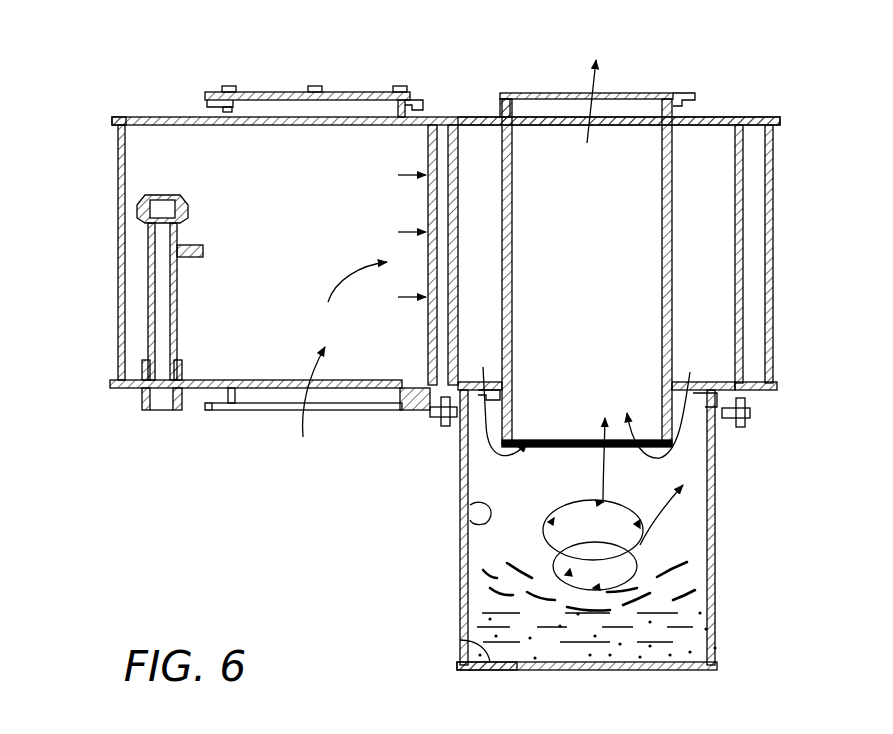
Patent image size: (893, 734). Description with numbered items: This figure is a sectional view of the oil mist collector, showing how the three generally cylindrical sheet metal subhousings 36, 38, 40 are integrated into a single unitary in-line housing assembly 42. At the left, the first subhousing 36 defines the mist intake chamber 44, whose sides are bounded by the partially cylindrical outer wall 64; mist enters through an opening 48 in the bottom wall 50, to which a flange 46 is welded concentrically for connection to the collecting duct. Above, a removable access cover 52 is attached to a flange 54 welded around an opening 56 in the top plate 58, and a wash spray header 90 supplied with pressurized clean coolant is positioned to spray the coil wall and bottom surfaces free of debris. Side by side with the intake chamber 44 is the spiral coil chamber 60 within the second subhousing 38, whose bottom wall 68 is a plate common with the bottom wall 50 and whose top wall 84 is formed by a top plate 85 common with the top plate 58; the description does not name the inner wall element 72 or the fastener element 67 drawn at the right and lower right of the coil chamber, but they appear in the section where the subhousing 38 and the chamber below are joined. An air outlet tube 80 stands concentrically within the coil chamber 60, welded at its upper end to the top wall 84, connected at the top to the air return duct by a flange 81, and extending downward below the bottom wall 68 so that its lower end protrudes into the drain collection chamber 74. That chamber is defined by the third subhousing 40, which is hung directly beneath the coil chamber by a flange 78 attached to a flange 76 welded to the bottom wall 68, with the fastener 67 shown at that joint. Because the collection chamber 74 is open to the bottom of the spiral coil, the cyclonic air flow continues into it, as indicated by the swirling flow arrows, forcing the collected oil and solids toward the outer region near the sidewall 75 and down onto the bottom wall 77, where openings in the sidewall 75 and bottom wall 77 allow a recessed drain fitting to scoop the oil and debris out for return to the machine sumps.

The first subhousing 36 is at (117, 323).
The second subhousing 38 is at (773, 211).
The third subhousing 40 is at (715, 582).
The housing assembly 42 is at (532, 92).
The mist intake chamber 44 is at (262, 228).
The flange 46 is at (227, 412).
The opening 48 is at (248, 380).
The bottom wall 50 is at (200, 388).
The removable access cover 52 is at (257, 92).
The flange 54 is at (424, 104).
The opening 56 is at (370, 122).
The top plate 58 is at (166, 117).
The spiral coil chamber 60 is at (690, 150).
The outer wall 64 is at (470, 380).
The clamp bolt 67 is at (779, 391).
The bottom wall 68 is at (752, 377).
The inner wall 72 is at (753, 280).
The drain collection chamber 74 is at (510, 495).
The sidewall 75 is at (470, 520).
The flange 76 is at (728, 382).
The bottom wall 77 is at (460, 642).
The flange 78 is at (449, 430).
The air outlet tube 80 is at (609, 253).
The flange 81 is at (676, 94).
The top wall 84 is at (467, 117).
The top plate 85 is at (110, 120).
The wash spray header 90 is at (147, 280).